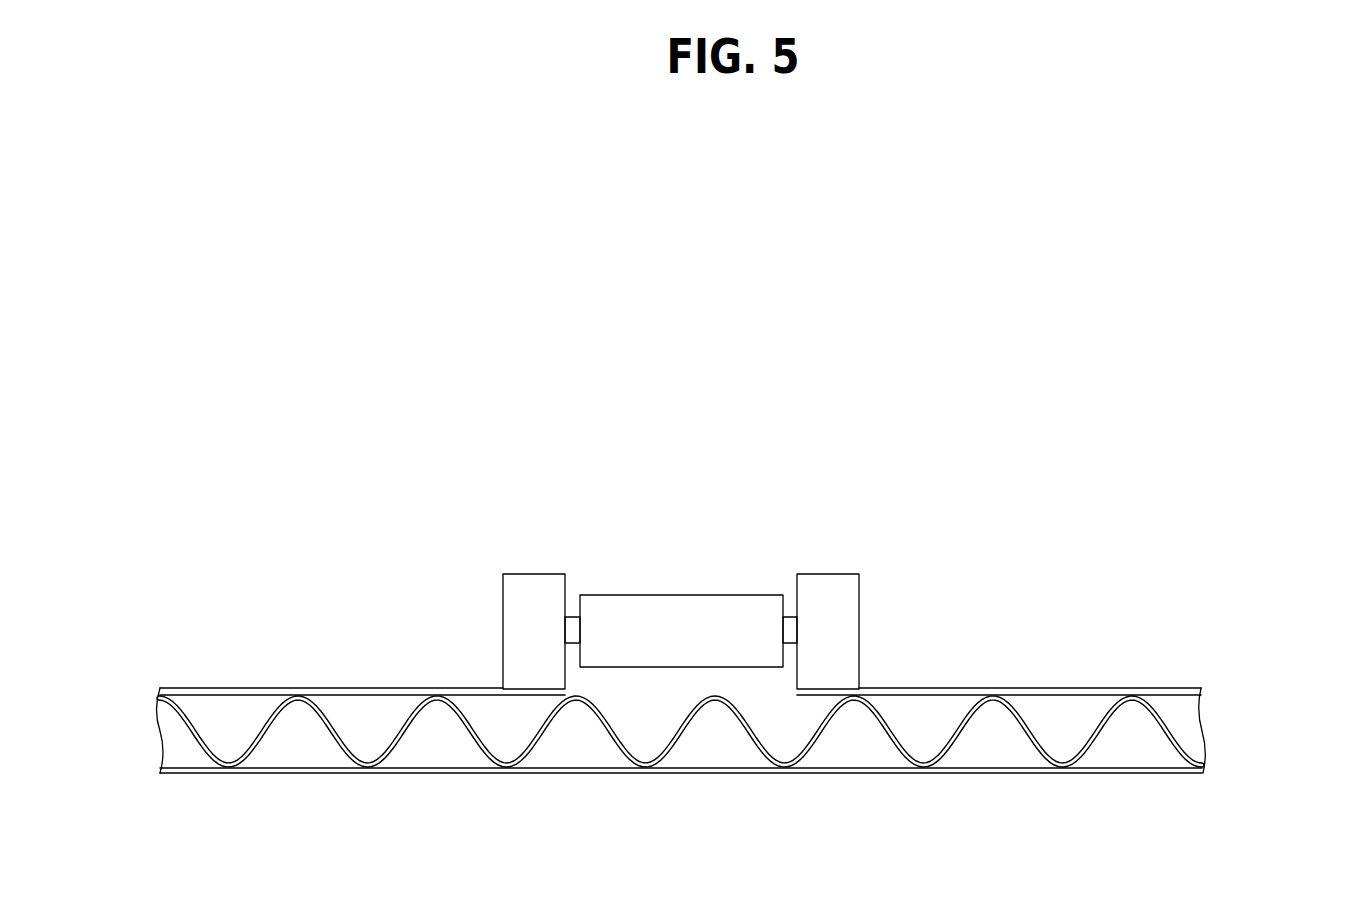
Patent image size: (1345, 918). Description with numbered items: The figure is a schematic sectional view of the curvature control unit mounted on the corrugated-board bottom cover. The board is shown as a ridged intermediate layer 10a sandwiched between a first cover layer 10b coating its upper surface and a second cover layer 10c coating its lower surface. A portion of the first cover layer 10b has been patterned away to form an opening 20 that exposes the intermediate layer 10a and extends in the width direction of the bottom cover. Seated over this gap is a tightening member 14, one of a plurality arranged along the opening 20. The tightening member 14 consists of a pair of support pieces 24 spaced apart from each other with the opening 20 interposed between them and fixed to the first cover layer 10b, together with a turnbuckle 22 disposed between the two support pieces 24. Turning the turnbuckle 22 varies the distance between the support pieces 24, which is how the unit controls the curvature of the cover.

The tightening member 14 is at (587, 428).
The opening 20 is at (745, 687).
The turnbuckle 22 is at (688, 627).
The support piece 24 is at (538, 592).
The intermediate layer 10a is at (1172, 729).
The first cover layer 10b is at (1203, 691).
The second cover layer 10c is at (1203, 770).